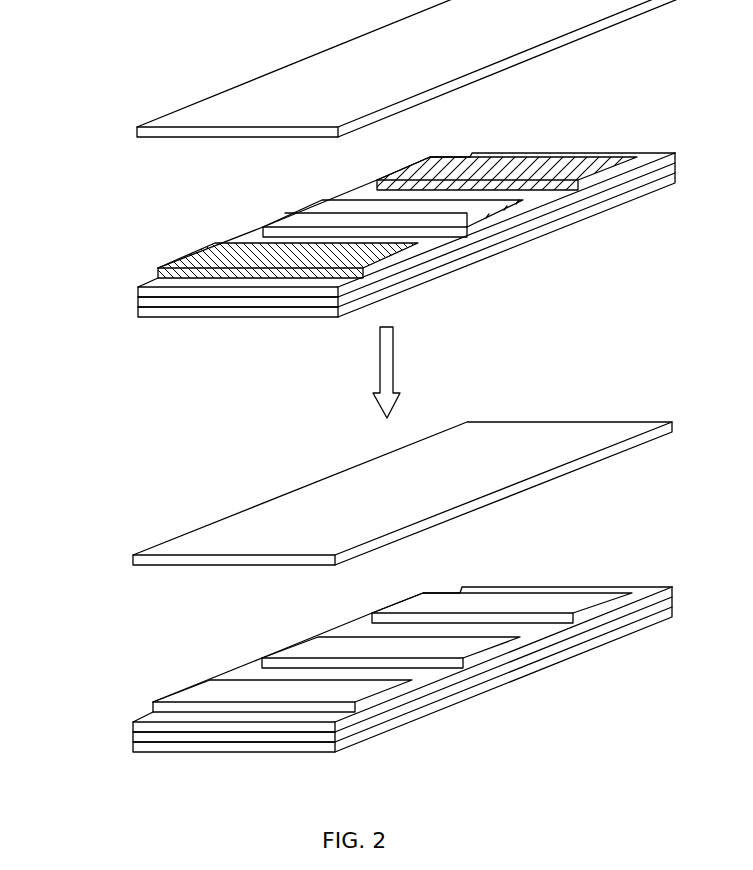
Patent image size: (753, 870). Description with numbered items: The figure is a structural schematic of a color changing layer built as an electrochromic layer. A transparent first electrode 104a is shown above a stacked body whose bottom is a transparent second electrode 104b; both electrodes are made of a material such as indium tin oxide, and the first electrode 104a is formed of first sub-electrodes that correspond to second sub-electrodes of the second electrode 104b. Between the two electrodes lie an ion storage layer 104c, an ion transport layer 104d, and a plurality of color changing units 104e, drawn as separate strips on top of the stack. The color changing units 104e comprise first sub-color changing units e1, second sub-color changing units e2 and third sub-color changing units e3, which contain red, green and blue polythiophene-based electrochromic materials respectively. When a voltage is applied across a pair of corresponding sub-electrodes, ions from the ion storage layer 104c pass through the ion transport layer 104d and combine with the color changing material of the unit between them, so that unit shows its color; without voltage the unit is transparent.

The first electrode 104a is at (186, 117).
The second electrode 104b is at (143, 313).
The ion storage layer 104c is at (147, 305).
The ion transport layer 104d is at (147, 285).
The color changing units 104e is at (582, 164).
The first sub-color changing units e1 is at (432, 180).
The second sub-color changing units e2 is at (315, 217).
The third sub-color changing units e3 is at (213, 250).